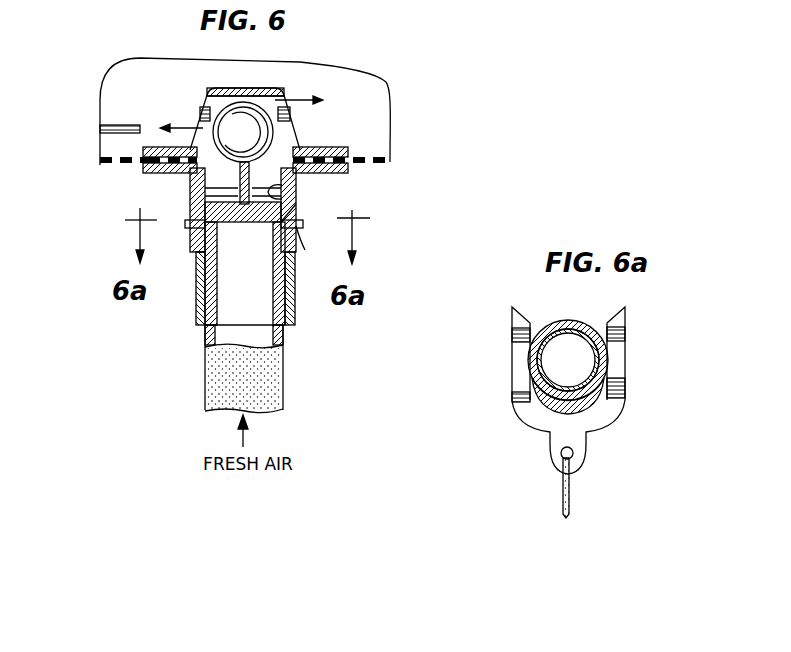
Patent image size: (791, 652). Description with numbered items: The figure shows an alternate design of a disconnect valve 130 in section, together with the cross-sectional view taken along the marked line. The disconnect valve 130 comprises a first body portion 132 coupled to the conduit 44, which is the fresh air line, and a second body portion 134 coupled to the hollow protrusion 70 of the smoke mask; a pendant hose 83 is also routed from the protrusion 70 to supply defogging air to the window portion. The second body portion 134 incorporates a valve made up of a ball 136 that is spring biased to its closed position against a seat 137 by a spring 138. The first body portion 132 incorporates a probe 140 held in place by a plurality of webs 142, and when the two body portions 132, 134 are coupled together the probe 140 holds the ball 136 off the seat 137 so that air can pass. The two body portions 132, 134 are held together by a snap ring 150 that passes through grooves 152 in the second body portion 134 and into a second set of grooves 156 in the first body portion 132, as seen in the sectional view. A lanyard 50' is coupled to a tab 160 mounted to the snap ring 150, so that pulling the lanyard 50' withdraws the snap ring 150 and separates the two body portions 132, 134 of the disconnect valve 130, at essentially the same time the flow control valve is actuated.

In FIG. 6, the hollow protrusion 70 is at (390, 162).
In FIG. 6, the pendant hose 83 is at (118, 125).
In FIG. 6, the spring 138 is at (222, 108).
In FIG. 6, the ball 136 is at (266, 131).
In FIG. 6a, the ball 136 is at (528, 349).
In FIG. 6, the probe 140 is at (200, 190).
In FIG. 6, the seat 137 is at (284, 191).
In FIG. 6, the webs 142 is at (215, 209).
In FIG. 6, the second set of grooves 156 is at (305, 206).
In FIG. 6a, the second set of grooves 156 is at (612, 364).
In FIG. 6, the grooves 152 is at (215, 226).
In FIG. 6a, the grooves 152 is at (527, 370).
In FIG. 6, the first body portion 132 is at (293, 253).
In FIG. 6, the second body portion 134 is at (190, 255).
In FIG. 6a, the second body portion 134 is at (530, 322).
In FIG. 6, the snap ring 150 is at (297, 226).
In FIG. 6a, the snap ring 150 is at (603, 420).
In FIG. 6, the disconnect valve 130 is at (108, 252).
In FIG. 6, the conduit 44 is at (284, 383).
In FIG. 6a, the tab 160 is at (548, 439).
In FIG. 6a, the pin 50' is at (599, 488).